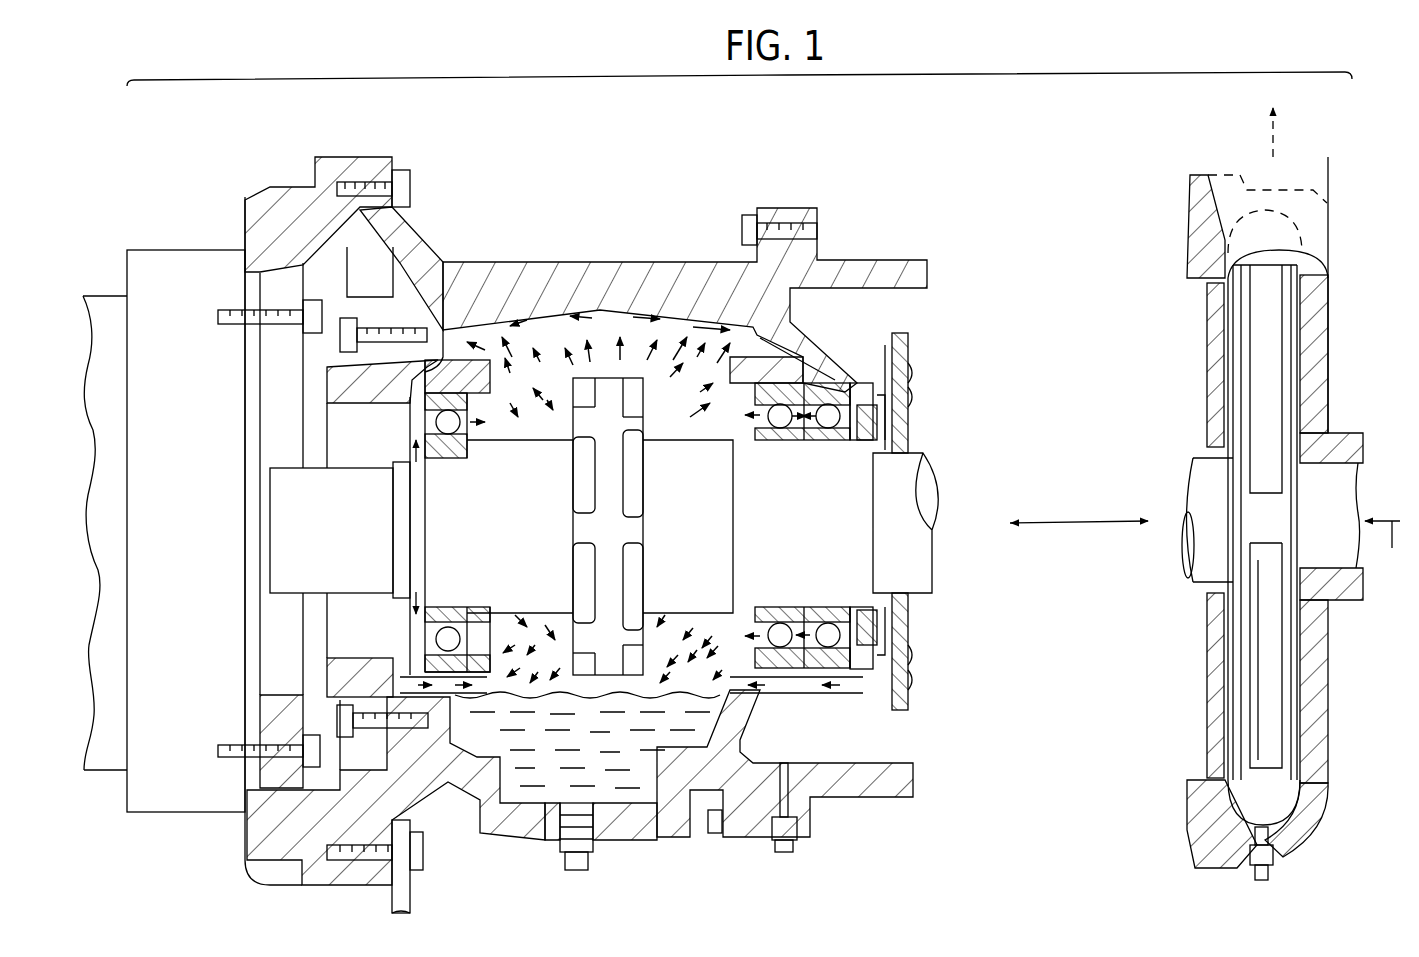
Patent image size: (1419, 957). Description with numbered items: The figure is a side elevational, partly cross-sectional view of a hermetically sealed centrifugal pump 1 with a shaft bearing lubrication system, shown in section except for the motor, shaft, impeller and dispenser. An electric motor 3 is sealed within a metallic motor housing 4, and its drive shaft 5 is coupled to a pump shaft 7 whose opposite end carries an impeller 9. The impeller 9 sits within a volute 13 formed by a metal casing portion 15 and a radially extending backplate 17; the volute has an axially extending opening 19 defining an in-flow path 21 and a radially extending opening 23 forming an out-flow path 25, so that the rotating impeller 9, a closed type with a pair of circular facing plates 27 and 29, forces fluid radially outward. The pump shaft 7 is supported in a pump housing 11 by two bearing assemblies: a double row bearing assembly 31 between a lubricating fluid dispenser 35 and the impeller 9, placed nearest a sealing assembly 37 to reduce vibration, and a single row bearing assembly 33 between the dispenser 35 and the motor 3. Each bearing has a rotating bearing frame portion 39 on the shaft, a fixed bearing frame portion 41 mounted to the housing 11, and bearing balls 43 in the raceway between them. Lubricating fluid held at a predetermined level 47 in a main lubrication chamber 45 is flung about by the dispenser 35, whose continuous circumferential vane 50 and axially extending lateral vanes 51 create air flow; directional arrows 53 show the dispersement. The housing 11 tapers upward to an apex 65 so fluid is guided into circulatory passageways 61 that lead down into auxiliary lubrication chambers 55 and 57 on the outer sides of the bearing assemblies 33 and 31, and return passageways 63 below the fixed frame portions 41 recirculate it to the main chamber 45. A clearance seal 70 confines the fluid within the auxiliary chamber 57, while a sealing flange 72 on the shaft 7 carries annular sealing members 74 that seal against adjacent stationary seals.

The pump 1 is at (350, 135).
The electric motor 3 is at (103, 748).
The motor housing 4 is at (102, 292).
The drive shaft 5 is at (268, 560).
The pump shaft 7 is at (1220, 534).
The impeller 9 is at (1290, 413).
The pump housing 11 is at (270, 195).
The volute 13 is at (1283, 233).
The casing portion 15 is at (1318, 322).
The backplate 17 is at (1212, 363).
The axially extending opening 19 is at (1327, 487).
The in-flow path 21 is at (1382, 550).
The radially extending opening 23 is at (1225, 163).
The out-flow path 25 is at (1275, 148).
The circular facing plate 27 is at (1283, 662).
The circular facing plate 29 is at (1252, 692).
The bearing assembly 31 is at (782, 442).
The bearing assembly 33 is at (460, 458).
The lubricating fluid dispenser 35 is at (640, 493).
The sealing assembly 37 is at (890, 350).
The rotating bearing frame portion 39 is at (440, 458).
The fixed bearing frame portion 41 is at (848, 400).
The bearing balls 43 is at (440, 420).
The main lubrication chamber 45 is at (612, 325).
The predetermined level 47 is at (612, 698).
The continuous vane 50 is at (632, 463).
The lateral vanes 51 is at (582, 458).
The directional arrows 53 is at (520, 410).
The auxiliary lubrication chamber 55 is at (410, 455).
The auxiliary lubrication chamber 57 is at (875, 445).
The circulatory passageway 61 is at (400, 368).
The return passageway 63 is at (450, 695).
The apex 65 is at (603, 330).
The clearance seal 70 is at (876, 420).
The sealing flange 72 is at (900, 333).
The annular sealing members 74 is at (912, 397).